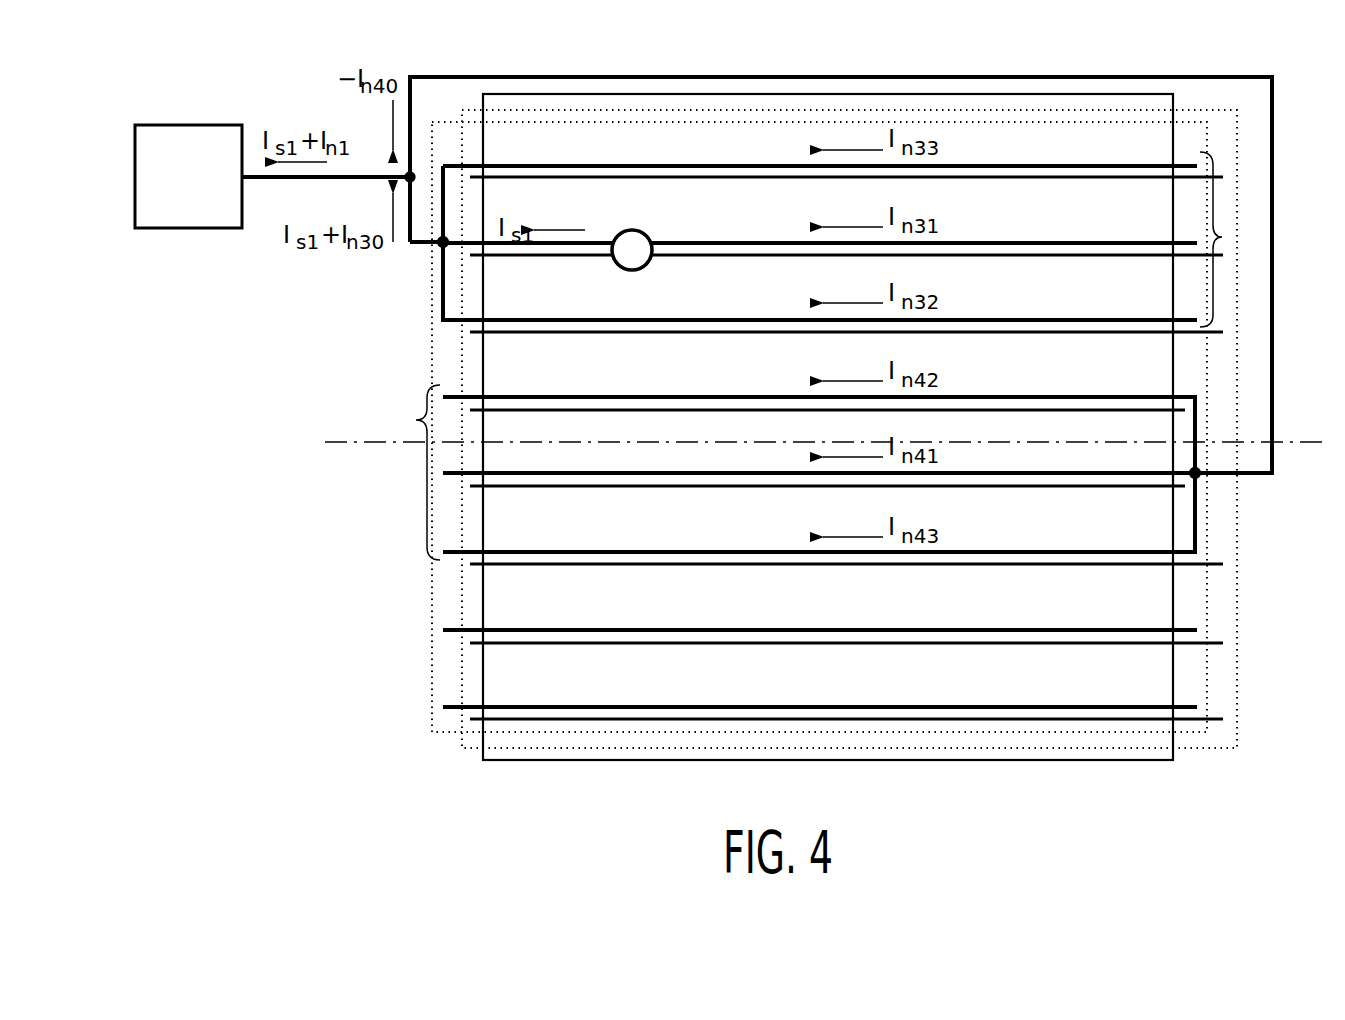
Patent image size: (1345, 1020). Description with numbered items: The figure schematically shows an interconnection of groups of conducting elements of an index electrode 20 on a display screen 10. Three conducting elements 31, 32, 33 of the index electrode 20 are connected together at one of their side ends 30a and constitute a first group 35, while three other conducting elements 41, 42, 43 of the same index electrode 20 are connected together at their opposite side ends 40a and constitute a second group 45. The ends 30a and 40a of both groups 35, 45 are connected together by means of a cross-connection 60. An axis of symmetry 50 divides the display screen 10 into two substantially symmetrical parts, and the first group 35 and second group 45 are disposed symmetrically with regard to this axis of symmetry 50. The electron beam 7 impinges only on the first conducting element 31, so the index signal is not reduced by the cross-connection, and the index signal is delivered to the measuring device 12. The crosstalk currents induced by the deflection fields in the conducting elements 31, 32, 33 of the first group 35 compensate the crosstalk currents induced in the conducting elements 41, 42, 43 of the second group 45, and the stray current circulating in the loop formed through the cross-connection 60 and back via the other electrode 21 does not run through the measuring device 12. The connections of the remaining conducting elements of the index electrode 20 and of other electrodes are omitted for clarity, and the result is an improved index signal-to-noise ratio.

The electron beam 7 is at (632, 250).
The display screen 10 is at (1028, 94).
The measuring device 12 is at (275, 176).
The index electrode 20 is at (430, 647).
The other electrode 21 is at (1240, 662).
The side end of first group 30a is at (440, 247).
The first conducting element 31 is at (712, 243).
The conducting element 32 is at (712, 320).
The conducting element 33 is at (712, 166).
The first group of conducting elements 35 is at (1222, 237).
The opposite side end of second group 40a is at (1200, 477).
The conducting element 41 is at (712, 473).
The conducting element 42 is at (712, 397).
The conducting element 43 is at (712, 552).
The second group of conducting elements 45 is at (416, 420).
The axis of symmetry 50 is at (336, 448).
The cross-connection 60 is at (1272, 165).